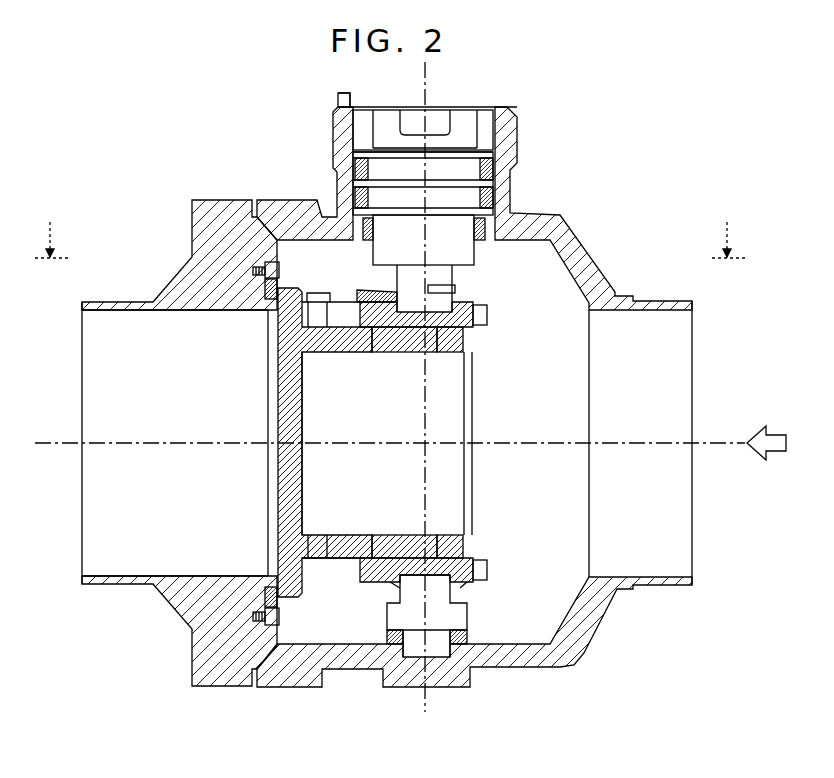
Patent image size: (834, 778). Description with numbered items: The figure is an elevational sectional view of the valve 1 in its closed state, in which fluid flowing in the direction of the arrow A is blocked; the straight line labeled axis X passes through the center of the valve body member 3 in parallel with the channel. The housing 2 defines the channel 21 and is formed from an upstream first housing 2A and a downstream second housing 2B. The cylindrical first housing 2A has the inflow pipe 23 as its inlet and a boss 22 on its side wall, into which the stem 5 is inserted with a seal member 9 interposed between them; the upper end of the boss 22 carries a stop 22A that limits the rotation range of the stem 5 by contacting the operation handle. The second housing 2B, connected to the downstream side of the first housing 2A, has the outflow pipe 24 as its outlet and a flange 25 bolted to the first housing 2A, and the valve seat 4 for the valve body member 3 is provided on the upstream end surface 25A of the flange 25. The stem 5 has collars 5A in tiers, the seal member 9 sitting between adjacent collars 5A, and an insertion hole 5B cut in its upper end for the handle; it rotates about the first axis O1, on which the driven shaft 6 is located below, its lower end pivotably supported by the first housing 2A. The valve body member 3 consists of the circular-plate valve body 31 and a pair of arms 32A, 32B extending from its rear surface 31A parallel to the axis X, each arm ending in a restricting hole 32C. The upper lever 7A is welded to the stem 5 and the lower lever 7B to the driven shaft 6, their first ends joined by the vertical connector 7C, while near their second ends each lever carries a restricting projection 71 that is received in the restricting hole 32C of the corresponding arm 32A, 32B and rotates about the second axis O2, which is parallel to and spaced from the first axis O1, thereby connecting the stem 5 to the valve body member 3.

The valve 1 is at (258, 110).
The housing 2 is at (387, 409).
The first housing 2A is at (284, 689).
The second housing 2B is at (179, 651).
The valve body member 3 is at (366, 441).
The valve seat 4 is at (280, 604).
The stem 5 is at (435, 187).
The collars 5A is at (483, 145).
The insertion hole 5B is at (440, 127).
The driven shaft 6 is at (469, 613).
The upper lever 7A is at (488, 314).
The lower lever 7B is at (488, 566).
The vertical connector 7C is at (478, 390).
The seal member 9 is at (506, 168).
The channel 21 is at (535, 495).
The boss 22 is at (513, 190).
The stop 22A is at (347, 93).
The inflow pipe 23 is at (657, 300).
The outflow pipe 24 is at (115, 301).
The flange 25 is at (215, 199).
The upstream end surface 25A is at (283, 254).
The valve body 31 is at (296, 420).
The rear surface 31A is at (305, 472).
The upper arm 32A is at (318, 346).
The lower arm 32B is at (336, 534).
The restricting hole 32C is at (365, 435).
The restricting projection 71 is at (418, 353).
The first axis O1 is at (425, 702).
The second axis O2 is at (422, 362).
The axis X is at (60, 441).
The arrow A is at (774, 443).